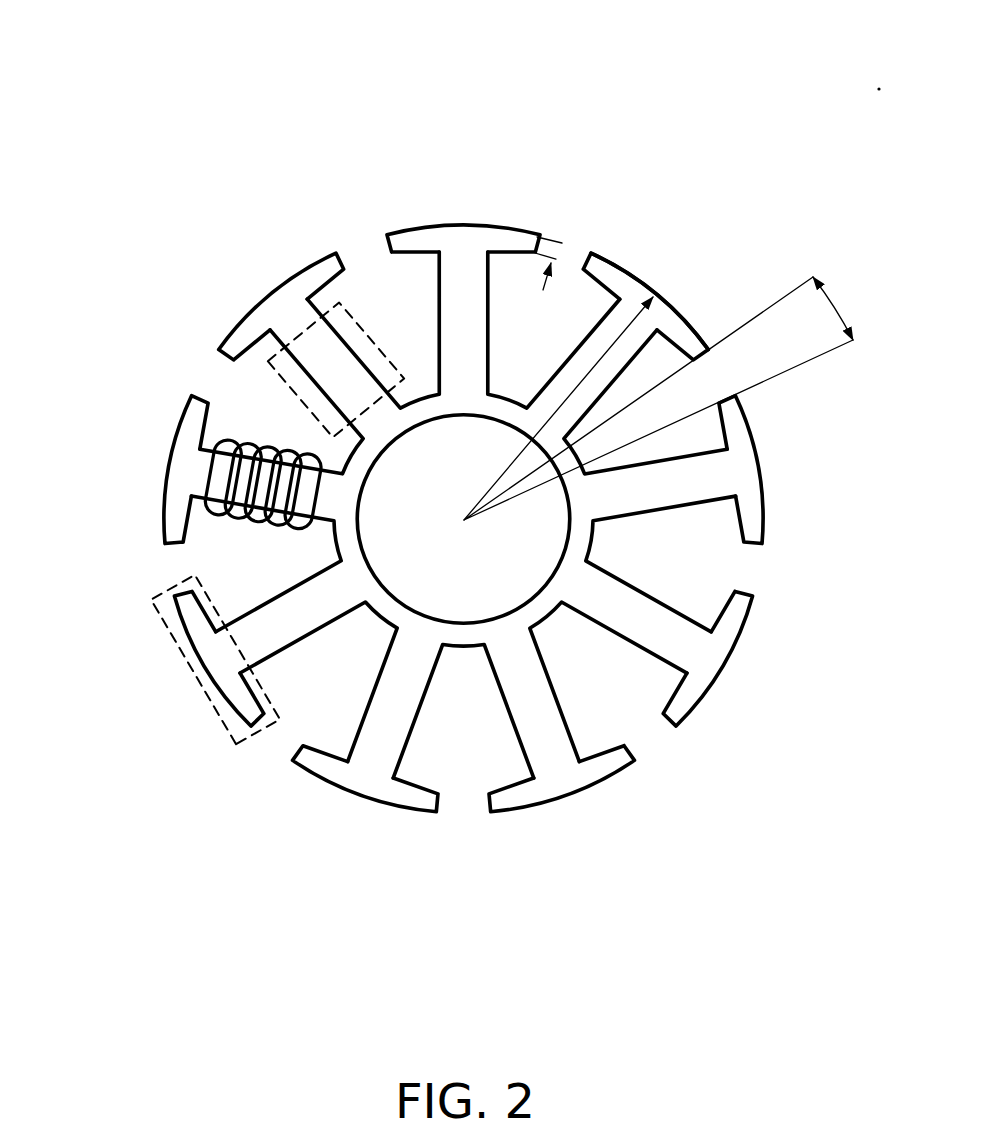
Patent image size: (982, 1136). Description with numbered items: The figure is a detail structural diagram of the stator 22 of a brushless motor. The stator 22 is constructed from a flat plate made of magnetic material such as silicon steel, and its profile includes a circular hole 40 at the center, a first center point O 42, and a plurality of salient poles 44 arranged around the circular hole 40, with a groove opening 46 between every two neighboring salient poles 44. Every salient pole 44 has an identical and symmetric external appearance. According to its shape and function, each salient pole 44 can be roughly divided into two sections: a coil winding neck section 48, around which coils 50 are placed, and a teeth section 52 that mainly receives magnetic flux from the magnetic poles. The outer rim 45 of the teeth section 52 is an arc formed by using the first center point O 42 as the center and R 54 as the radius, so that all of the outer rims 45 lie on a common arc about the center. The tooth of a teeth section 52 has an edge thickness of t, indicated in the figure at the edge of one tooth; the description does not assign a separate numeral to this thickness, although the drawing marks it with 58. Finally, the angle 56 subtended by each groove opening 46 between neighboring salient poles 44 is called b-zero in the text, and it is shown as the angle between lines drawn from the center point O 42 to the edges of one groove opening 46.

The stator 22 is at (435, 112).
The circular hole 40 is at (532, 604).
The first center point O 42 is at (470, 523).
The salient pole 44 is at (487, 235).
The outer rim 45 is at (622, 266).
The groove opening 46 is at (385, 297).
The coil winding neck section 48 is at (262, 360).
The coil 50 is at (200, 450).
The teeth section 52 is at (160, 628).
The radius R 54 is at (497, 471).
The angle b0 56 is at (842, 300).
The pole shoe thickness t 58 is at (557, 234).